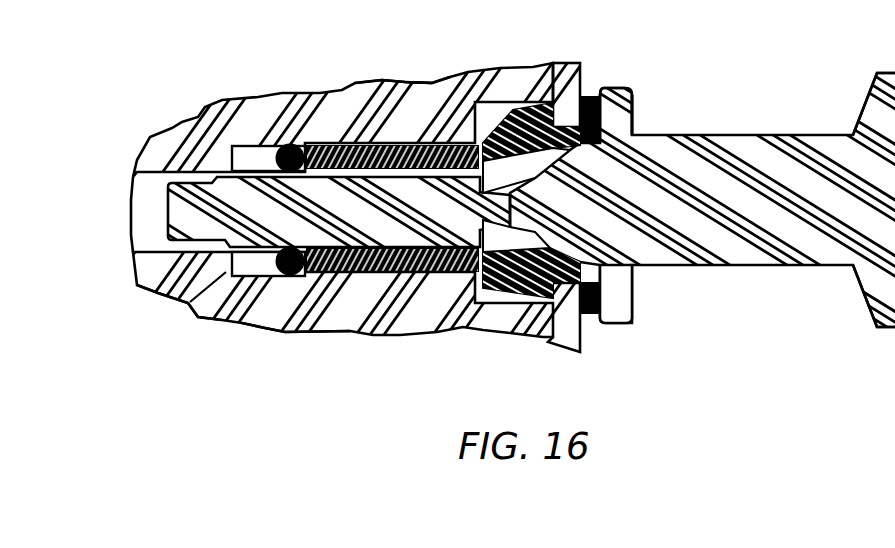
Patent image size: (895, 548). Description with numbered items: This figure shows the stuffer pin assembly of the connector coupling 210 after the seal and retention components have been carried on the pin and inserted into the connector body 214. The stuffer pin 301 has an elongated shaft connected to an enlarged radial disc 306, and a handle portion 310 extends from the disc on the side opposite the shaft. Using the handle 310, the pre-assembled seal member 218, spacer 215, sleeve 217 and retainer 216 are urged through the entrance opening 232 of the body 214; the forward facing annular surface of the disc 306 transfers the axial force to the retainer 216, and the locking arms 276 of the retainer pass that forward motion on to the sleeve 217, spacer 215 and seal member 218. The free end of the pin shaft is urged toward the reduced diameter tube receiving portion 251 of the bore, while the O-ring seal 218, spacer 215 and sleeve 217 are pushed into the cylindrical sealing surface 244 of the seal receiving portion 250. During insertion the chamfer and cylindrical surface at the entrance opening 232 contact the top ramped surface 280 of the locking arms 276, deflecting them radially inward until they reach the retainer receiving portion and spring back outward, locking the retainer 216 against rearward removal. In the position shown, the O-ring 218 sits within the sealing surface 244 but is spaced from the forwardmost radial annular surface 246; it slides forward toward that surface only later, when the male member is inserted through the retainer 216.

The connector coupling 210 is at (360, 332).
The connector body 214 is at (305, 93).
The spacer 215 is at (396, 72).
The retainer 216 is at (518, 86).
The sleeve 217 is at (431, 84).
The seal member 218 is at (273, 327).
The entrance opening 232 is at (582, 333).
The cylindrical sealing surface 244 is at (198, 317).
The forwardmost radial annular surface 246 is at (186, 299).
The seal receiving portion 250 is at (249, 155).
The reduced diameter tube receiving portion 251 is at (148, 180).
The locking arms 276 is at (582, 67).
The top ramped surface 280 is at (505, 285).
The stuffer pin 301 is at (686, 139).
The radial disc 306 is at (624, 88).
The handle portion 310 is at (765, 267).